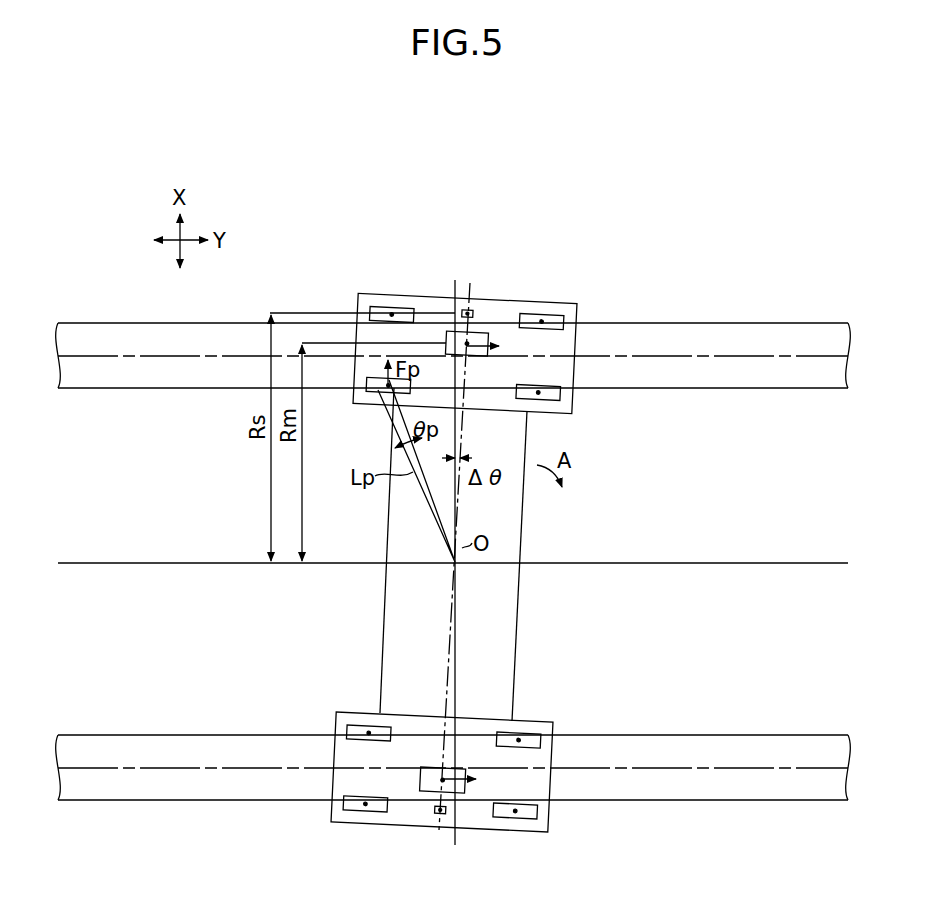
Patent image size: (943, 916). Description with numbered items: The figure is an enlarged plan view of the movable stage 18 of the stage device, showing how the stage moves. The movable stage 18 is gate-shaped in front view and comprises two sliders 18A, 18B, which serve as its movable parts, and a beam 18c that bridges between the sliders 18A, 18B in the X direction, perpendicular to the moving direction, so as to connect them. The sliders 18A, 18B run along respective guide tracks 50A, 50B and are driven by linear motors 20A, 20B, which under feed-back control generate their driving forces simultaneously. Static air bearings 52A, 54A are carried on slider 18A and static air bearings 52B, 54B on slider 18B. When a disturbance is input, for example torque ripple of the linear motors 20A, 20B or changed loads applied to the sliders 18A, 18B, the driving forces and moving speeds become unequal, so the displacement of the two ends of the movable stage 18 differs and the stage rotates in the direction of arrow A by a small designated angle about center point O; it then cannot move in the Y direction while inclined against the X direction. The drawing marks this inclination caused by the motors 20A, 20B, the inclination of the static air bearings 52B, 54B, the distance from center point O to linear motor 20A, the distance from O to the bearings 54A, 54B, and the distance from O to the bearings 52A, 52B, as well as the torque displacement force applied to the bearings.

The movable stage 18 is at (441, 554).
The slider 18A is at (437, 294).
The slider 18B is at (390, 822).
The beam 18c is at (508, 607).
The linear motor 20A is at (500, 322).
The linear motor 20B is at (473, 798).
The static air bearing 52A is at (380, 306).
The static air bearing 52B is at (362, 809).
The static air bearing 54A is at (373, 406).
The static air bearing 54B is at (362, 719).
The first rail 50A is at (708, 389).
The second rail 50B is at (708, 801).